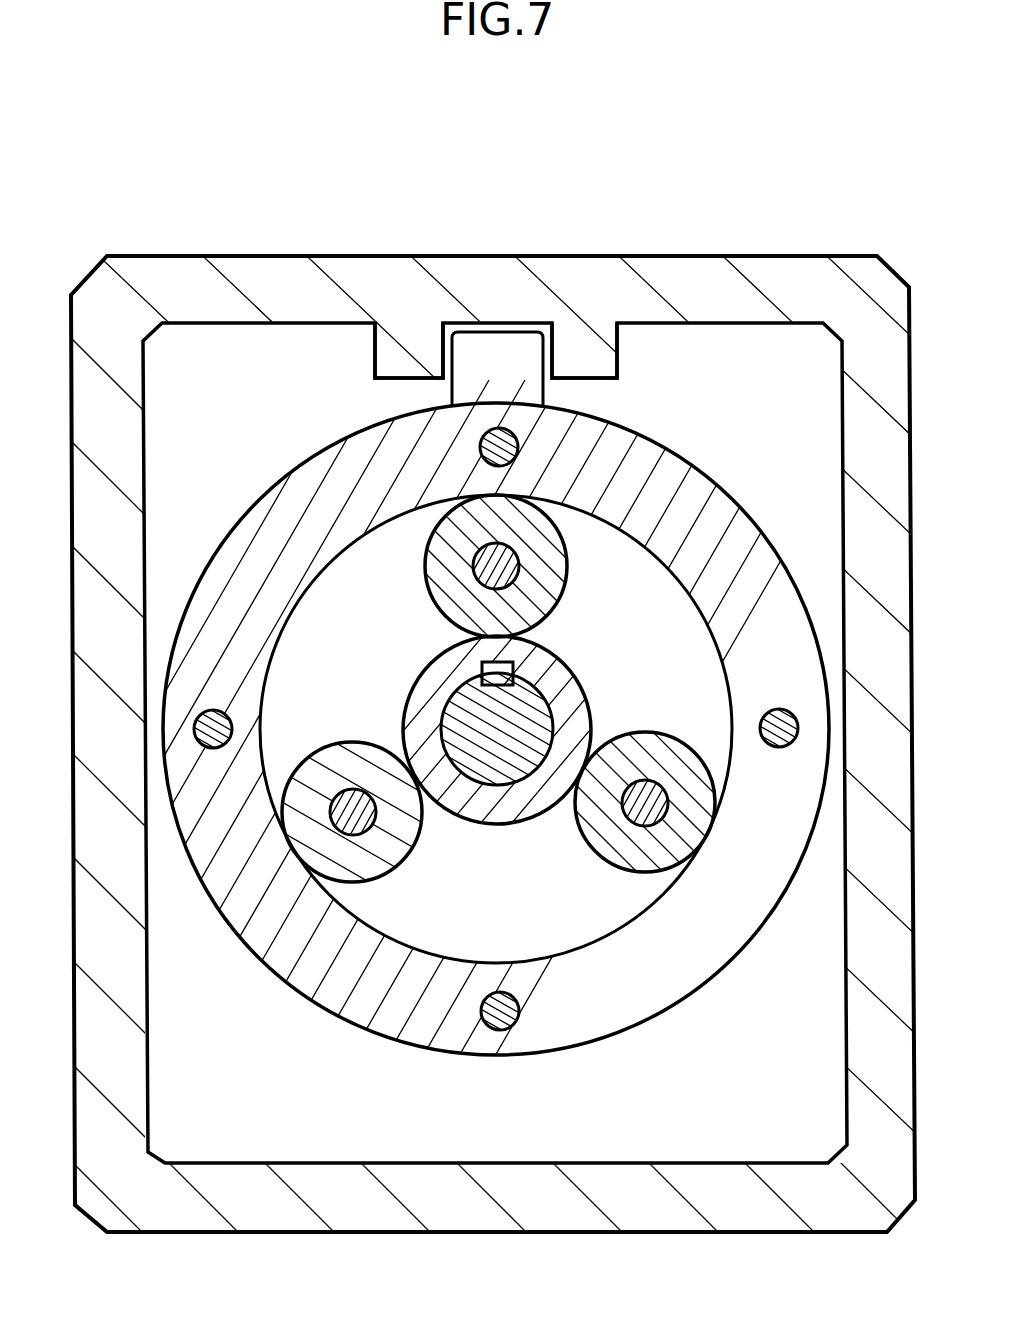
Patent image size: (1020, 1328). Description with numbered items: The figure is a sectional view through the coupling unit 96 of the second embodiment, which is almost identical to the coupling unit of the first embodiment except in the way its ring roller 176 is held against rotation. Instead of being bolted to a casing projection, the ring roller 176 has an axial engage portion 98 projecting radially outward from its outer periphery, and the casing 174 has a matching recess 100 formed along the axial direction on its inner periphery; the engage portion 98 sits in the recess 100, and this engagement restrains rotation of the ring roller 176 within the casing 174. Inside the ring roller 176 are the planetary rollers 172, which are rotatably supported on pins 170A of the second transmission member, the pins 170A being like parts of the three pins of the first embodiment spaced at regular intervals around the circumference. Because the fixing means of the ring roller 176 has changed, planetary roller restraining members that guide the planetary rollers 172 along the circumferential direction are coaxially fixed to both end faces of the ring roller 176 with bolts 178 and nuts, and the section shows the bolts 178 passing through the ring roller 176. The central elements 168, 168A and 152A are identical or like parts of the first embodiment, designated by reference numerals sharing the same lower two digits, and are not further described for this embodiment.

The coupling unit 96 is at (738, 129).
The engage portion 98 is at (523, 372).
The recess 100 is at (503, 347).
The casing 174 is at (456, 256).
The ring roller 176 is at (642, 432).
The bolts 178 is at (501, 1031).
The pins 170A is at (487, 563).
The planetary rollers 172 is at (553, 605).
The sun gear 168 is at (578, 668).
The key of sun gear 168A is at (548, 722).
The shaft bore of sun gear 152A is at (506, 766).